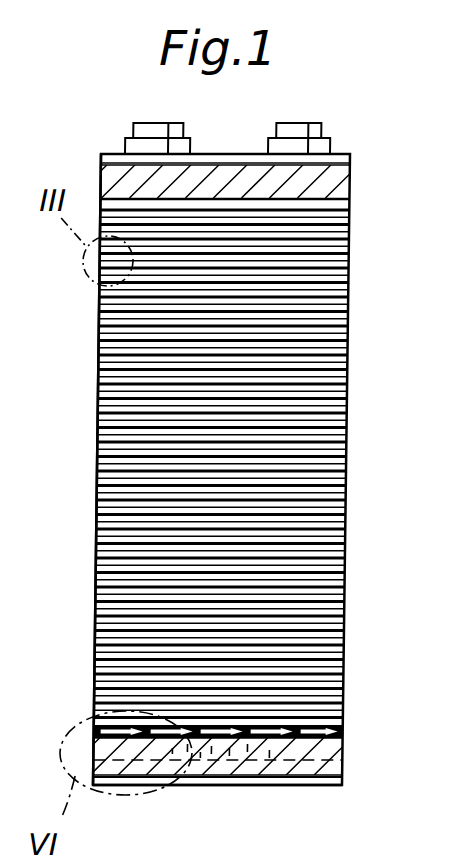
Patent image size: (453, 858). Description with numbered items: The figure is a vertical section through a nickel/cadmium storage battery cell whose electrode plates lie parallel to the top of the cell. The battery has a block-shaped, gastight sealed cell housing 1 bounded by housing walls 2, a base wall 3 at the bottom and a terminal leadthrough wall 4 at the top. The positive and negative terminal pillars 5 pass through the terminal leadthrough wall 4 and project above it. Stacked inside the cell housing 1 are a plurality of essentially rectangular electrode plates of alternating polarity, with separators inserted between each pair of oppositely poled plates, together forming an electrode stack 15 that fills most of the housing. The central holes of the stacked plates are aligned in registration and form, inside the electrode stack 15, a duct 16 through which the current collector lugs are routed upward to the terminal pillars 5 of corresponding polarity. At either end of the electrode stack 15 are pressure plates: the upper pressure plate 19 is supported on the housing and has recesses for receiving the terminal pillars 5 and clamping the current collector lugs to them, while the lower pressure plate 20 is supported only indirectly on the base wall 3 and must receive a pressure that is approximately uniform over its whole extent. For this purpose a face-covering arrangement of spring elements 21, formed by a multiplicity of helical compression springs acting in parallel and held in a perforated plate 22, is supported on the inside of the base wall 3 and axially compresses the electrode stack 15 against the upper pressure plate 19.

The cell housing 1 is at (350, 342).
The housing walls 2 is at (93, 345).
The base wall 3 is at (332, 772).
The terminal leadthrough wall 4 is at (222, 150).
The terminal pillars 5 is at (133, 117).
The electrode stack 15 is at (116, 600).
The duct 16 is at (254, 437).
The upper pressure plate 19 is at (329, 201).
The lower pressure plate 20 is at (342, 712).
The spring elements 21 is at (269, 716).
The perforated plate 22 is at (328, 742).